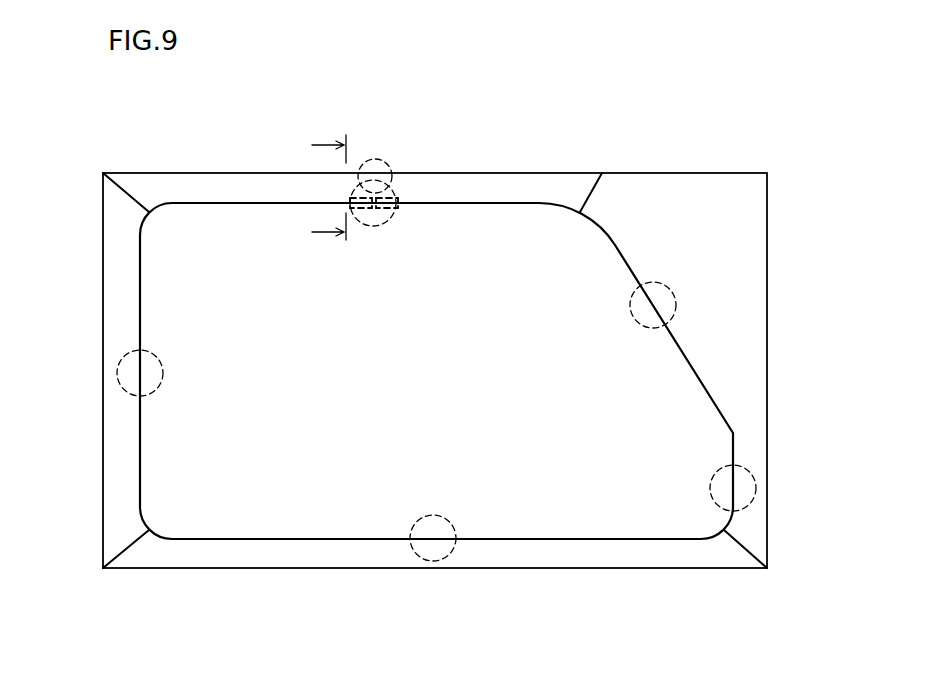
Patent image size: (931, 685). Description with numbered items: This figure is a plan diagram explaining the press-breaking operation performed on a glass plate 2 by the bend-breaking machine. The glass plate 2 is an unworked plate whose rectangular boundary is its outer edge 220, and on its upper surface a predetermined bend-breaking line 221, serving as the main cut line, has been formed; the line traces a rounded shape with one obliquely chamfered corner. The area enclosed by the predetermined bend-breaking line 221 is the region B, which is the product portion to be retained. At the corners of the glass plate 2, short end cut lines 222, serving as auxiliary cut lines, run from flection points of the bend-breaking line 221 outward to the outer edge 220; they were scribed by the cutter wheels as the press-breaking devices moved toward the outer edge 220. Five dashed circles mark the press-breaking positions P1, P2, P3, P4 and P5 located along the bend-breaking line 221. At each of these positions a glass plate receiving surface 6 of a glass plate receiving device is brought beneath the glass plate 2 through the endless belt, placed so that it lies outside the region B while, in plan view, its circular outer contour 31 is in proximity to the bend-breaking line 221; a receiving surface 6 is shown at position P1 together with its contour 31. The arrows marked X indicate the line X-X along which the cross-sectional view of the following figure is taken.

The glass plate 2 is at (706, 183).
The outer edge 220 is at (544, 571).
The predetermined bend-breaking line 221 is at (490, 201).
The end cut line 222 is at (122, 186).
The circular outer contour 31 is at (374, 167).
The glass plate receiving surface 6 is at (368, 171).
The line X- X is at (319, 189).
The press-breaking position P1 is at (368, 219).
The press-breaking position P2 is at (664, 305).
The press-breaking position P3 is at (740, 490).
The press-breaking position P4 is at (430, 551).
The press-breaking position P5 is at (130, 385).
The region B is at (163, 463).